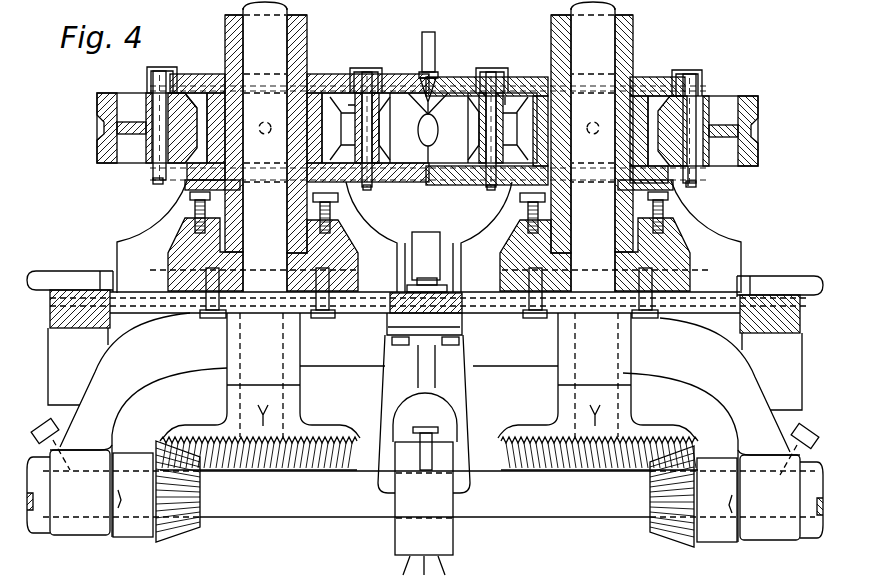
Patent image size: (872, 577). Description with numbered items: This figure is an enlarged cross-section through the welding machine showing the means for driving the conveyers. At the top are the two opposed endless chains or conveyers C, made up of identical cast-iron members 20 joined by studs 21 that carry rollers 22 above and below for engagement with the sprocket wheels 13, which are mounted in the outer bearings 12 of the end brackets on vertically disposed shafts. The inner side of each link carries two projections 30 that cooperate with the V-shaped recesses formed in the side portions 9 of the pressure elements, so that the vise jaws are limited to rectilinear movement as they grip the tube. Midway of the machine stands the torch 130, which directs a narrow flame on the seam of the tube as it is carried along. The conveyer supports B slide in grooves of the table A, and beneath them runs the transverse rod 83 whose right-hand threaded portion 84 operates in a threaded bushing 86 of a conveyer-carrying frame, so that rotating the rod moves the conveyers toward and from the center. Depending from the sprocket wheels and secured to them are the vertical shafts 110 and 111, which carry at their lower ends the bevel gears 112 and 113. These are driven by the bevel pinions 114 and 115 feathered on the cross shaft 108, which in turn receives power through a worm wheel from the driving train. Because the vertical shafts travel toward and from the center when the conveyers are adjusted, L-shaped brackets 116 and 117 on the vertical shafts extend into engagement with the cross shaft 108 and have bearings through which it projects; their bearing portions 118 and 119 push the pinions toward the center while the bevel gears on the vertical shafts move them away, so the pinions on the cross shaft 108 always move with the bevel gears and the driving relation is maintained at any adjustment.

The side portion 9 is at (193, 128).
The outer bearing 12 is at (309, 22).
The sprocket wheel 13 is at (317, 82).
The chain link member 20 is at (128, 165).
The stud 21 is at (160, 186).
The roller 22 is at (150, 78).
The projection 30 is at (186, 95).
The transverse rod 83 is at (103, 270).
The right hand threaded portion 84 is at (440, 255).
The threaded bushing 86 is at (428, 238).
The cross shaft 108 is at (327, 510).
The vertical shaft 110 is at (261, 220).
The vertical shaft 111 is at (596, 220).
The bevel gear 112 is at (325, 435).
The bevel gear 113 is at (642, 440).
The bevel pinion 114 is at (182, 532).
The bevel pinion 115 is at (668, 535).
The L-shaped bracket 116 is at (129, 425).
The L-shaped bracket 117 is at (721, 430).
The bearing portion 118 is at (122, 535).
The bearing portion 119 is at (727, 540).
The torch 130 is at (436, 57).
The table A is at (68, 270).
The conveyer or pressure element support B is at (420, 206).
The endless chain or conveyer C is at (97, 140).